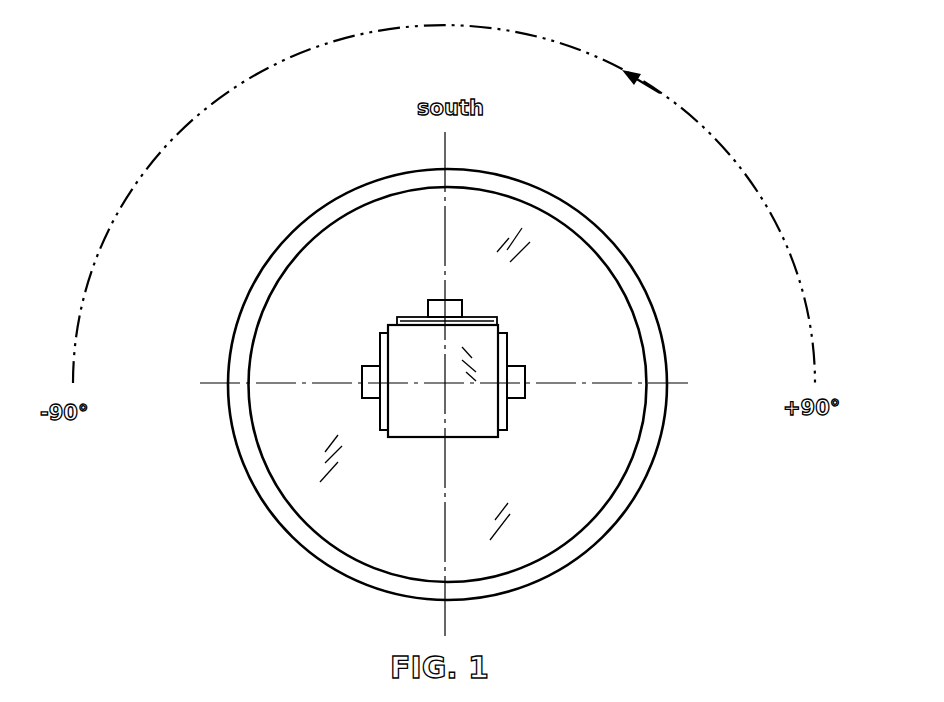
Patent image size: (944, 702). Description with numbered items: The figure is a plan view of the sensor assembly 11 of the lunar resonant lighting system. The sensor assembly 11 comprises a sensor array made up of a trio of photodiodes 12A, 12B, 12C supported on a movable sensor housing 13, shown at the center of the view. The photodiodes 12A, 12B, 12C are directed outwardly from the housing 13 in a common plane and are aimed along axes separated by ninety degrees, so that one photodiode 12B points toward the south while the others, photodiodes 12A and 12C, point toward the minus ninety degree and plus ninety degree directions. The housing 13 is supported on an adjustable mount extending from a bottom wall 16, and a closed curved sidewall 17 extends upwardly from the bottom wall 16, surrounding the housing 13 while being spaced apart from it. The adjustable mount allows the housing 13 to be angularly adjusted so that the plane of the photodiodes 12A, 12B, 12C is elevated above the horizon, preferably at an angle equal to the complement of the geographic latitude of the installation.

The sensor assembly 11 is at (633, 556).
The photodiode 12A is at (362, 386).
The photodiode 12B is at (440, 300).
The photodiode 12C is at (527, 392).
The sensor housing 13 is at (407, 430).
The bottom wall 16 is at (290, 358).
The closed curved sidewall 17 is at (667, 403).